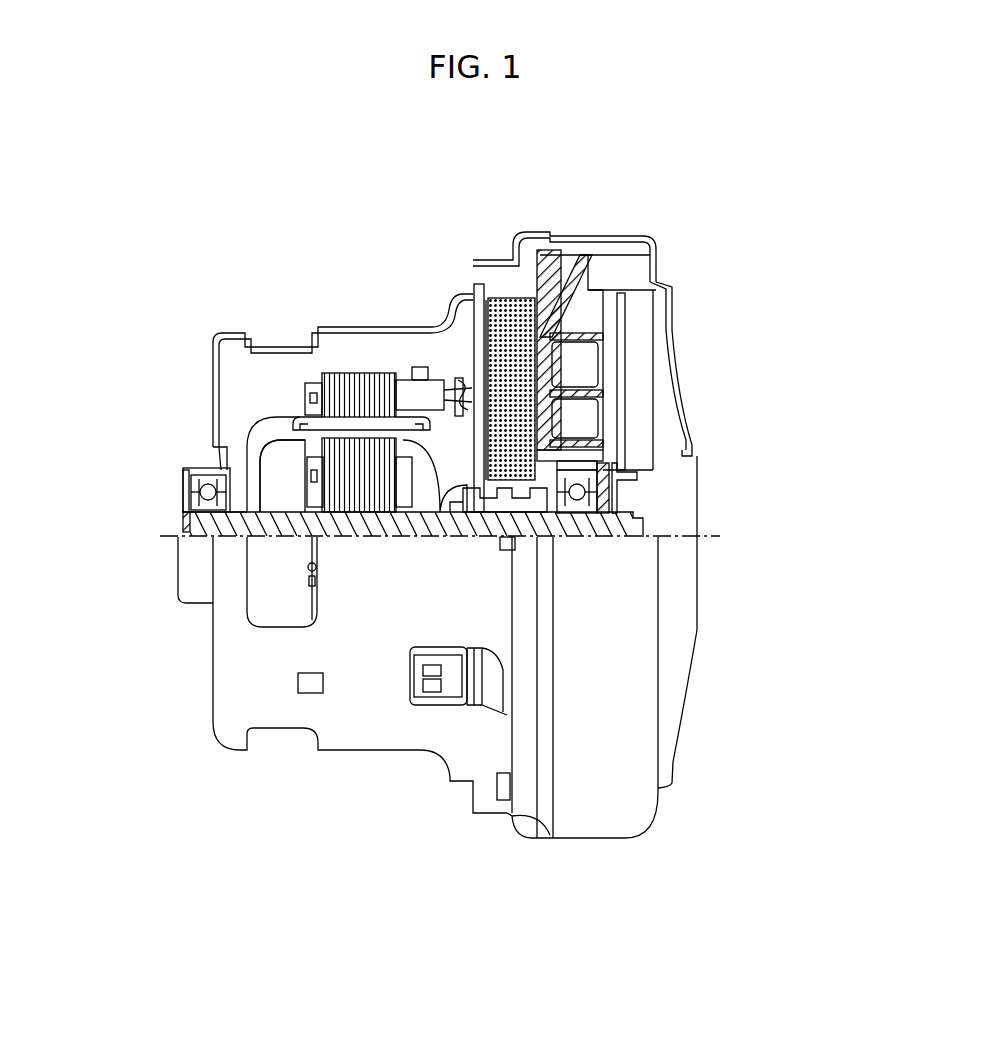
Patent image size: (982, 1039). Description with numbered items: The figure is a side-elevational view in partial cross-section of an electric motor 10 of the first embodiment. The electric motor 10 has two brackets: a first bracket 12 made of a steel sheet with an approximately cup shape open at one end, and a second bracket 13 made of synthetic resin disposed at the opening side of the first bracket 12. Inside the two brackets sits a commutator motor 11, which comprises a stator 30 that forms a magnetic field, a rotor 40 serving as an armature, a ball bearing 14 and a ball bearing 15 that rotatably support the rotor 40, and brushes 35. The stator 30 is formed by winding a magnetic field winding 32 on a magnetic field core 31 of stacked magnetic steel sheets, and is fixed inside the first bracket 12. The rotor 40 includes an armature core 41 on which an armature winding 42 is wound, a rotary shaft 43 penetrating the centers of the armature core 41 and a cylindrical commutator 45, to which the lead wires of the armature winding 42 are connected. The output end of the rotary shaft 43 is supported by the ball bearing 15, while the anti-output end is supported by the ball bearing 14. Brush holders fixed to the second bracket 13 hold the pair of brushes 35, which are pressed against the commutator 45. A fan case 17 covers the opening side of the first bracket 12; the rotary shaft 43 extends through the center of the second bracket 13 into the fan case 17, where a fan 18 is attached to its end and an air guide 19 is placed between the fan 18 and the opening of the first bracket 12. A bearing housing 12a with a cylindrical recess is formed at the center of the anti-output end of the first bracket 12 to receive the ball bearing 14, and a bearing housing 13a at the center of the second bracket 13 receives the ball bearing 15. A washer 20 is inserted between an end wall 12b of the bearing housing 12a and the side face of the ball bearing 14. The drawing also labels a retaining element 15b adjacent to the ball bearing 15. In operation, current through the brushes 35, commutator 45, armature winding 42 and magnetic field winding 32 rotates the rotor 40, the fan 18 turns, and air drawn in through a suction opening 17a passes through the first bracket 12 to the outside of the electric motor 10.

The electric motor 10 is at (627, 848).
The commutator motor 11 is at (265, 417).
The first bracket 12 is at (212, 380).
The bearing housing 12a is at (195, 470).
The end wall 12b is at (182, 495).
The second bracket 13 is at (567, 323).
The bearing housing 13a is at (600, 466).
The ball bearing 14 is at (193, 490).
The ball bearing 15 is at (587, 490).
The bearing retainer 15b is at (635, 473).
The fan case 17 is at (673, 320).
The suction opening 17a is at (683, 505).
The fan 18 is at (643, 393).
The air guide 19 is at (630, 258).
The washer 20 is at (182, 513).
The stator 30 is at (376, 309).
The magnetic field core 31 is at (378, 383).
The magnetic field winding 32 is at (363, 427).
The brushes 35 is at (507, 317).
The rotor 40 is at (378, 678).
The armature core 41 is at (355, 487).
The armature winding 42 is at (290, 487).
The rotary shaft 43 is at (232, 523).
The commutator 45 is at (493, 502).